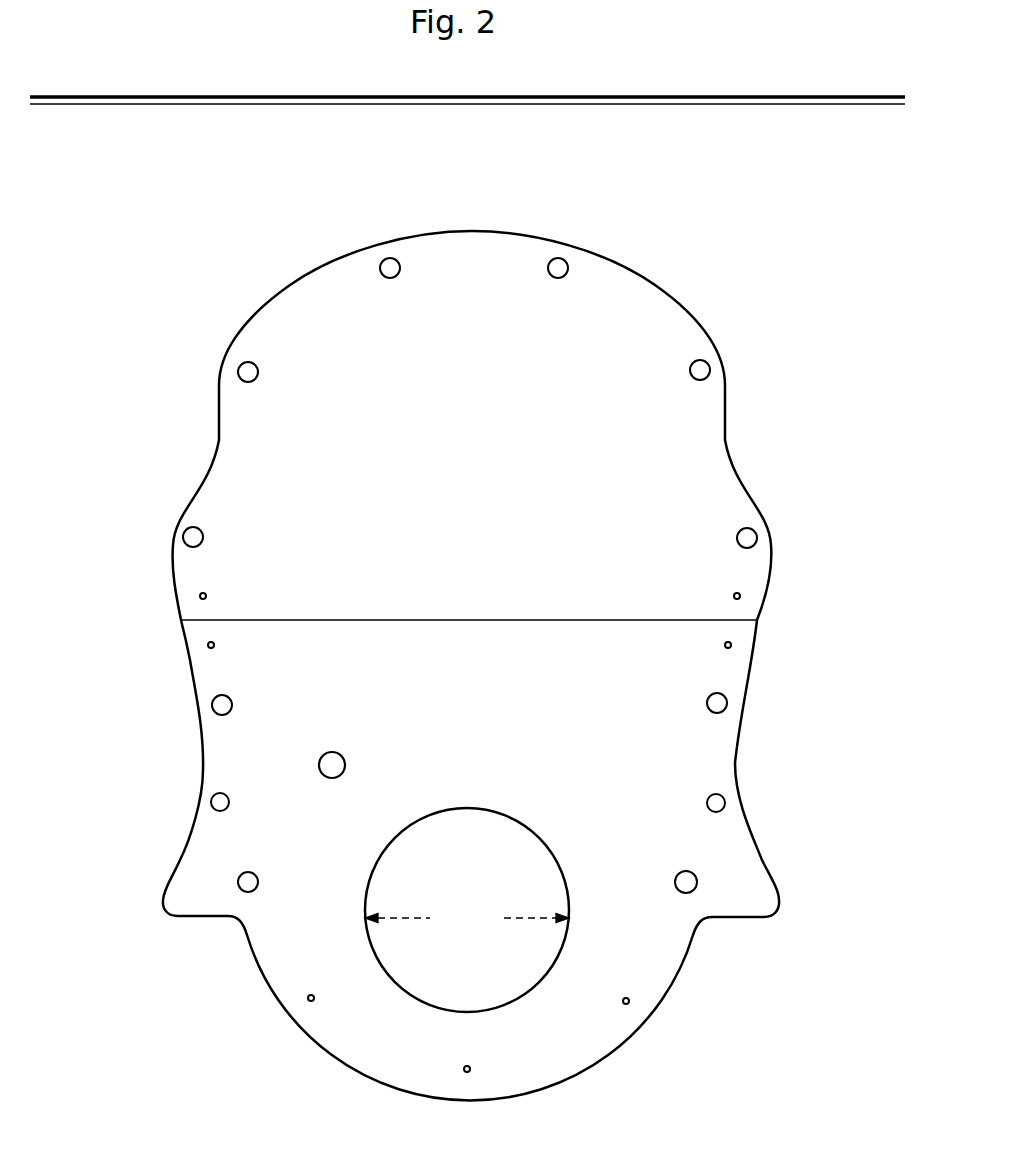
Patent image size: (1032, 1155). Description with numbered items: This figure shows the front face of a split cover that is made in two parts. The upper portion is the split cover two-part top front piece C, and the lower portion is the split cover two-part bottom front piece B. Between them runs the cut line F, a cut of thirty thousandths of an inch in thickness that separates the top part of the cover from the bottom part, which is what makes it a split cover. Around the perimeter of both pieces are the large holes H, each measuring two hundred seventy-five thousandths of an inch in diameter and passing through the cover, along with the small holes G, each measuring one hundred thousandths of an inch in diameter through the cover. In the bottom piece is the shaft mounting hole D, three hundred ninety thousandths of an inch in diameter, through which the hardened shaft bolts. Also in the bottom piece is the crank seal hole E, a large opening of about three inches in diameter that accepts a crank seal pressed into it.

The split cover two-part bottom front piece B is at (751, 764).
The split cover two-part top front piece C is at (713, 300).
The shaft mounting hole D is at (307, 784).
The crank seal hole E is at (534, 996).
The cut line F is at (168, 620).
The small hole G is at (757, 586).
The large hole H is at (370, 265).